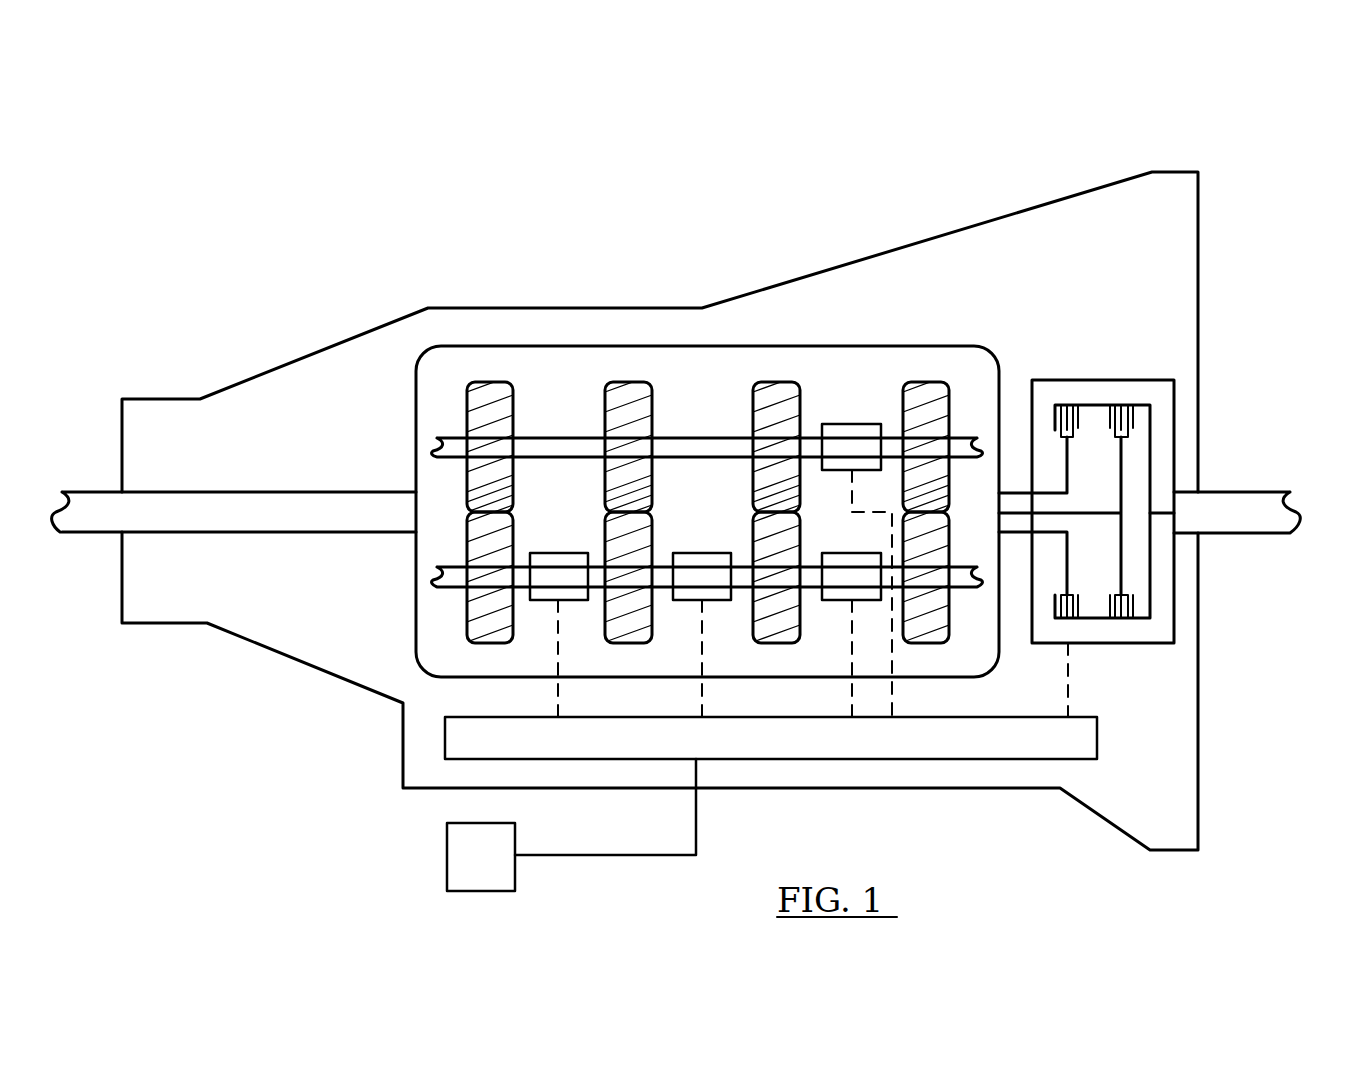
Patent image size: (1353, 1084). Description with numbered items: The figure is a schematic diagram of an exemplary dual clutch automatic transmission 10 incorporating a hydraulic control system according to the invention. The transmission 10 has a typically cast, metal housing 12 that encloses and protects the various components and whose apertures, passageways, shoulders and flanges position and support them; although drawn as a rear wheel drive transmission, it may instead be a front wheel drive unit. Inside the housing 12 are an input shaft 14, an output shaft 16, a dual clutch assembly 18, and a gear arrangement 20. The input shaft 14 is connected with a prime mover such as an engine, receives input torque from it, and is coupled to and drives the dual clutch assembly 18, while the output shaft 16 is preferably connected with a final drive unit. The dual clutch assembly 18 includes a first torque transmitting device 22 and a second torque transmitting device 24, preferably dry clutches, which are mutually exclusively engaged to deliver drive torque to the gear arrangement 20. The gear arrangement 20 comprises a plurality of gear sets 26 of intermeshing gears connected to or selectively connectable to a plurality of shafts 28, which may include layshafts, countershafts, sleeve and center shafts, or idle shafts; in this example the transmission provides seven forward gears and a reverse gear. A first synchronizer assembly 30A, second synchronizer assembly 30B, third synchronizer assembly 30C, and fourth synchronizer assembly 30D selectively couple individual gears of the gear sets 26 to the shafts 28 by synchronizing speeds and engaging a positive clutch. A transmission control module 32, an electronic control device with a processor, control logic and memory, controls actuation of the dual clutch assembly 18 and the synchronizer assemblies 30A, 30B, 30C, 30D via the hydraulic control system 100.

The dual clutch transmission 10 is at (1264, 173).
The housing 12 is at (497, 308).
The input shaft 14 is at (1252, 490).
The output shaft 16 is at (80, 490).
The dual clutch assembly 18 is at (1118, 380).
The gear arrangement 20 is at (468, 347).
The first torque transmitting device 22 is at (1078, 600).
The second torque transmitting device 24 is at (1133, 607).
The gear sets 26 is at (500, 382).
The shafts 28 is at (572, 438).
The first synchronizer assembly 30A is at (559, 576).
The second synchronizer assembly 30B is at (702, 576).
The third synchronizer assembly 30C is at (851, 576).
The fourth synchronizer assembly 30D is at (851, 447).
The transmission control module 32 is at (571, 825).
The hydraulic control system 100 is at (771, 614).